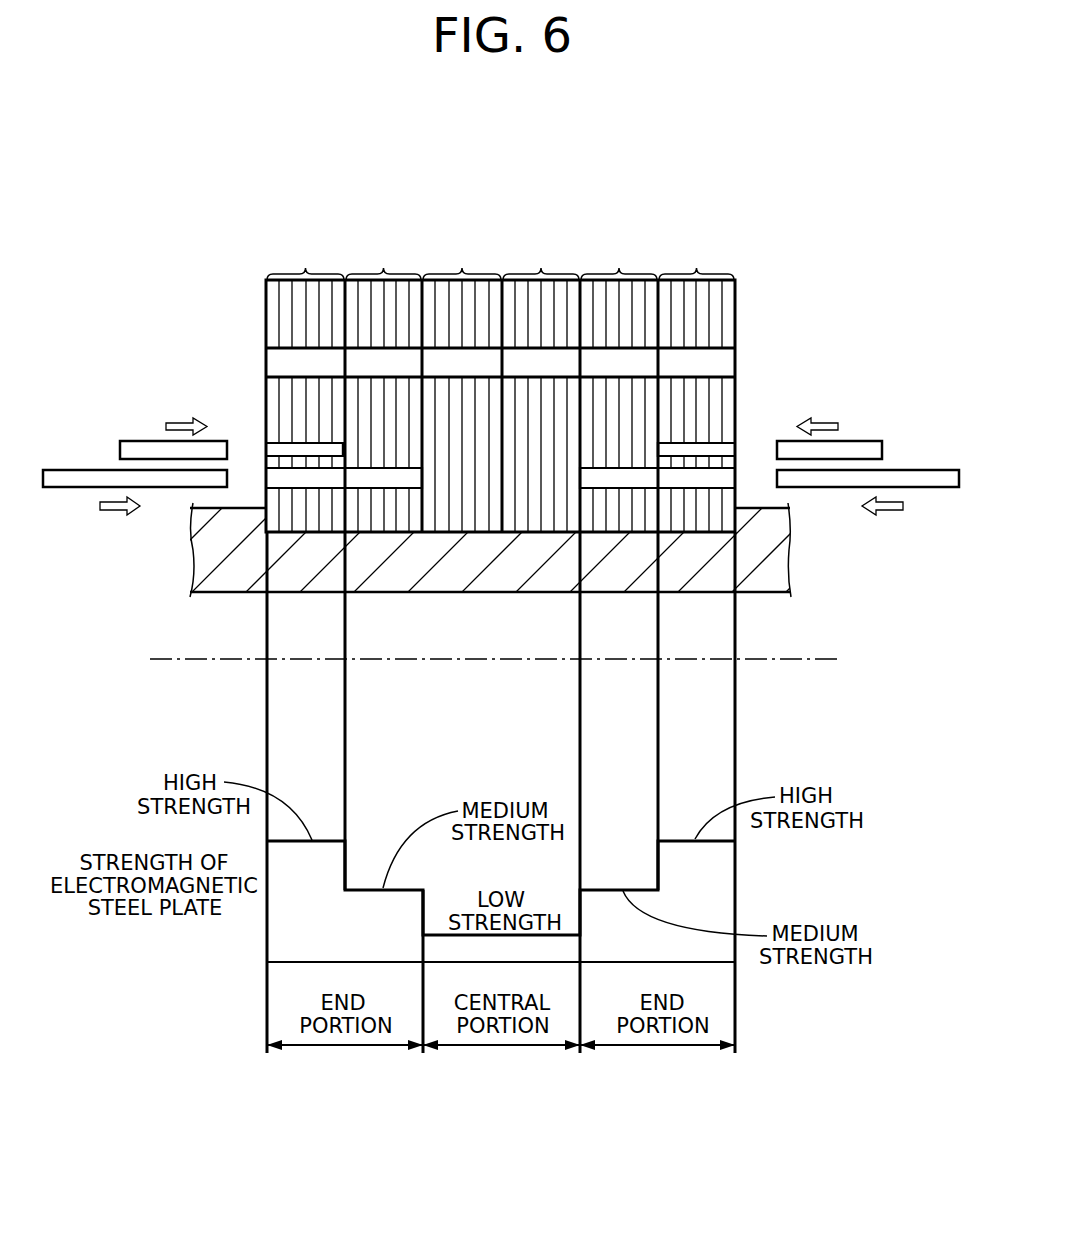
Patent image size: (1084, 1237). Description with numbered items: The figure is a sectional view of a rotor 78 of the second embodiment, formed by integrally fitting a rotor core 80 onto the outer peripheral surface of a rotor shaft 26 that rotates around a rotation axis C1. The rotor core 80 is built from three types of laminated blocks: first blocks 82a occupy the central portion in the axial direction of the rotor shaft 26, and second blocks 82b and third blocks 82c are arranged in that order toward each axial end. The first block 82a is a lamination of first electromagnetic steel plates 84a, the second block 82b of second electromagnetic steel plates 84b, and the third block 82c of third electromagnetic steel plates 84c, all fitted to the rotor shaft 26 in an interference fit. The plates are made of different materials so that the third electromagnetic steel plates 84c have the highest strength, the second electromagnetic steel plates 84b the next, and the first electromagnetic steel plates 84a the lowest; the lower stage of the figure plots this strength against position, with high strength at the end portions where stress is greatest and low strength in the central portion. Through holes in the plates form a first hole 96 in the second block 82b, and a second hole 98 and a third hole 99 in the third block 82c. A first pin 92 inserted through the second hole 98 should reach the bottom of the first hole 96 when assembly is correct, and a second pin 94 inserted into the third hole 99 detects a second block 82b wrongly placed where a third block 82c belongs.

The rotor 78 is at (210, 150).
The rotor core 80 is at (512, 204).
The first block 82a is at (503, 440).
The second block 82b is at (496, 442).
The third block 82c is at (494, 447).
The first electromagnetic steel plate 84a is at (468, 513).
The second electromagnetic steel plate 84b is at (383, 513).
The third electromagnetic steel plate 84c is at (300, 513).
The first hole 96 is at (366, 488).
The second hole 98 is at (305, 488).
The third hole 99 is at (292, 443).
The first pin 92 is at (73, 478).
The second pin 94 is at (140, 440).
The rotor shaft 26 is at (225, 572).
The rotation axis C1 is at (778, 659).